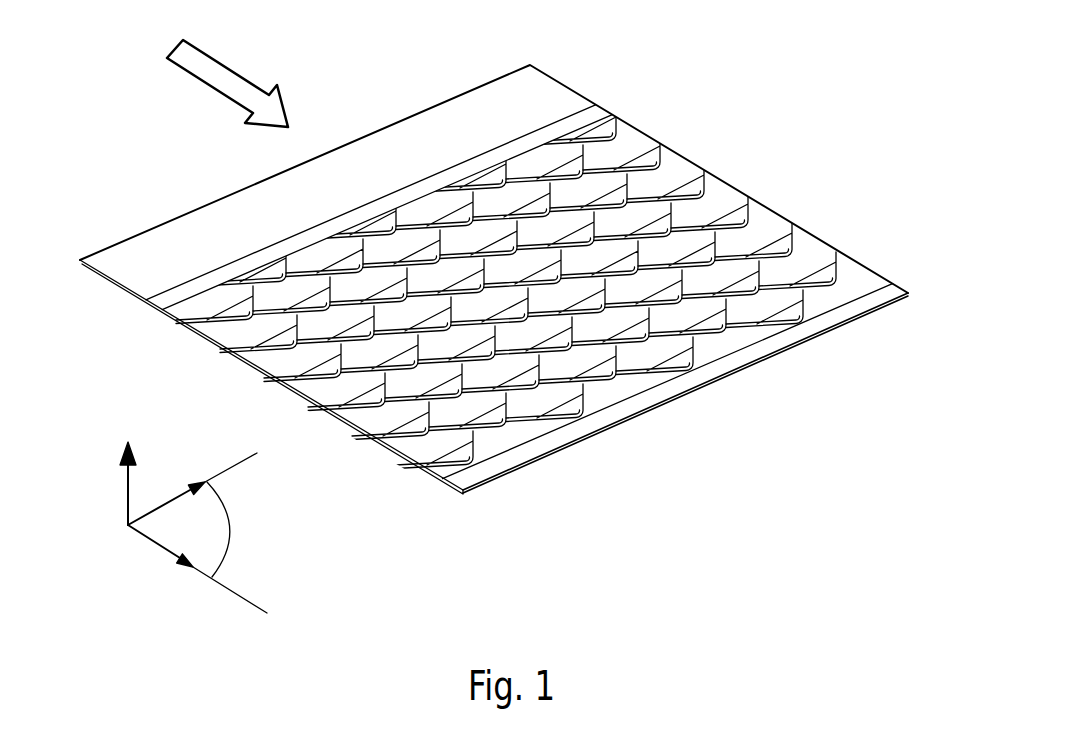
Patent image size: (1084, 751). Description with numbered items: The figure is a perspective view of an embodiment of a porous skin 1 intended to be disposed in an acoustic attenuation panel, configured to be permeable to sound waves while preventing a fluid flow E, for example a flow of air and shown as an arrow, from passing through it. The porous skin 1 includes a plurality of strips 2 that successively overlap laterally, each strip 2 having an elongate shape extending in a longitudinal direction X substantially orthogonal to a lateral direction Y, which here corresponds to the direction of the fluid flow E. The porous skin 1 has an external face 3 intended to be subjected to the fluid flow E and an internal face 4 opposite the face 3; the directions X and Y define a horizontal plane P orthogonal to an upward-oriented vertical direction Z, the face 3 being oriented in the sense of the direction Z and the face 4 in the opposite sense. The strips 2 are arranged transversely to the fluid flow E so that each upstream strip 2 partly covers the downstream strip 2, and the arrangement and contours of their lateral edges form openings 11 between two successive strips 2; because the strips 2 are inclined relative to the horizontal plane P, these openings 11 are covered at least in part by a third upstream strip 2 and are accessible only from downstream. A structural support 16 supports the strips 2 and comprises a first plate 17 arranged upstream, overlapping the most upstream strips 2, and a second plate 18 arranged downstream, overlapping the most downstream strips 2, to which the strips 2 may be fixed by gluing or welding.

The porous skin 1 is at (648, 92).
The strips 2 is at (725, 205).
The external face 3 is at (508, 378).
The internal face 4 is at (150, 324).
The openings 11 is at (688, 308).
The structural support 16 is at (157, 268).
The first plate 17 is at (493, 105).
The second plate 18 is at (833, 298).
The fluid flow E is at (228, 64).
The longitudinal direction X is at (157, 506).
The lateral direction Y is at (157, 545).
The vertical direction Z is at (128, 502).
The horizontal plane P is at (227, 529).